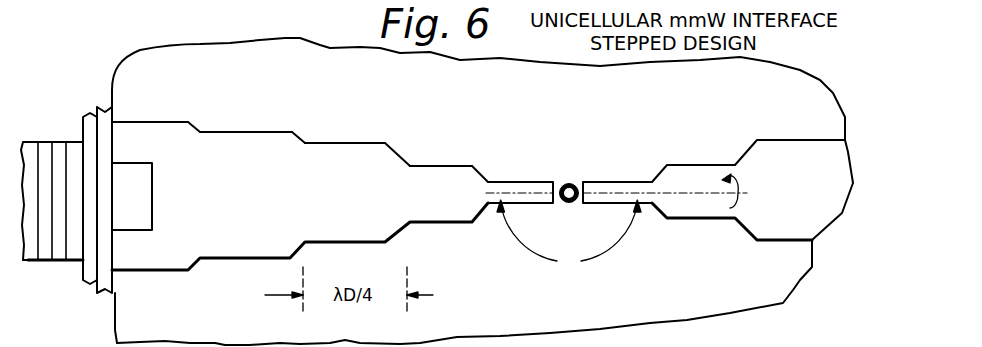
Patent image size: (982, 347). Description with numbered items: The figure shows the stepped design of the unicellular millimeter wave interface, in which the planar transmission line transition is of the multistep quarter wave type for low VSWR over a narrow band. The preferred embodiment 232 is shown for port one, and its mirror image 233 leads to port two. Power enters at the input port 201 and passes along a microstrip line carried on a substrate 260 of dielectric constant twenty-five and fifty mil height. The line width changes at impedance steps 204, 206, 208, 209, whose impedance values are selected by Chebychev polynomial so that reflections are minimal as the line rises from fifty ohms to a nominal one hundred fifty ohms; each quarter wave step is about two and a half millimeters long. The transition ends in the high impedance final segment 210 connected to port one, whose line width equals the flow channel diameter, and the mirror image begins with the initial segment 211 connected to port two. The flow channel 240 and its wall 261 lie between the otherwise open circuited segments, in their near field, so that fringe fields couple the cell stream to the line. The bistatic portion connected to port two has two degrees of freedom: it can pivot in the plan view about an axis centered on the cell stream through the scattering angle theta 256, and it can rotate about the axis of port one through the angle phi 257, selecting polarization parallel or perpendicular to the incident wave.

The input port 201 is at (58, 152).
The impedance step 204 is at (140, 130).
The impedance step 206 is at (233, 137).
The impedance step 208 is at (333, 148).
The impedance step 209 is at (435, 170).
The final segment 210 is at (545, 182).
The initial segment 211 is at (598, 182).
The multistep quarter wave transition 232 is at (252, 238).
The mirror image transition 233 is at (835, 169).
The flow channel 240 is at (570, 184).
The scattering angle theta 256 is at (569, 247).
The angle phi 257 is at (735, 198).
The substrate 260 is at (754, 94).
The wall 261 is at (572, 204).